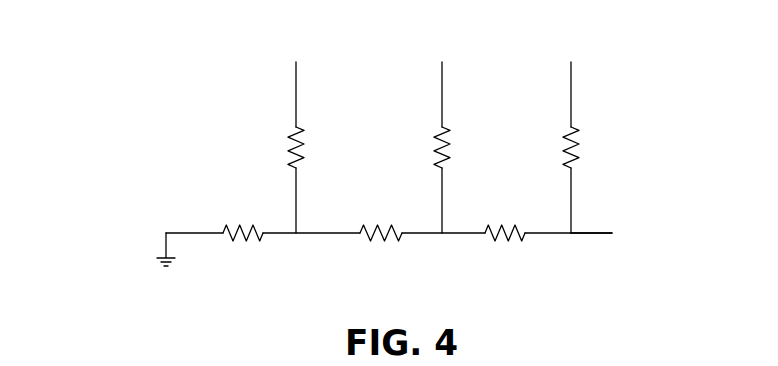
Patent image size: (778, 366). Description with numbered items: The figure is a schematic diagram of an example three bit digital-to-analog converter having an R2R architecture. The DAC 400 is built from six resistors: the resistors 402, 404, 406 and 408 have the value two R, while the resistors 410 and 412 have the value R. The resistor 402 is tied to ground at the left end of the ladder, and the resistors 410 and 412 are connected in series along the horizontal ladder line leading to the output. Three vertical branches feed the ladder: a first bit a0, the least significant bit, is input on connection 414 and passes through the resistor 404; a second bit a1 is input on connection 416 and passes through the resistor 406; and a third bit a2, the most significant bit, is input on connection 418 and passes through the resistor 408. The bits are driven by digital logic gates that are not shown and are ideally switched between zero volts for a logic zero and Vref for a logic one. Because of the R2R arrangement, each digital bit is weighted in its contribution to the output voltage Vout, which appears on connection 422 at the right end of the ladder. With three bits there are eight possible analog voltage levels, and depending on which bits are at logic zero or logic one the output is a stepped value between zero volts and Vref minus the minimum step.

The 3 bit DAC 400 is at (148, 51).
The resistor 402 is at (232, 223).
The resistor 404 is at (302, 148).
The resistor 406 is at (448, 148).
The resistor 408 is at (577, 148).
The resistor 410 is at (388, 224).
The resistor 412 is at (510, 224).
The connection 414 is at (297, 93).
The connection 416 is at (443, 93).
The connection 418 is at (572, 92).
The connection 422 is at (595, 233).